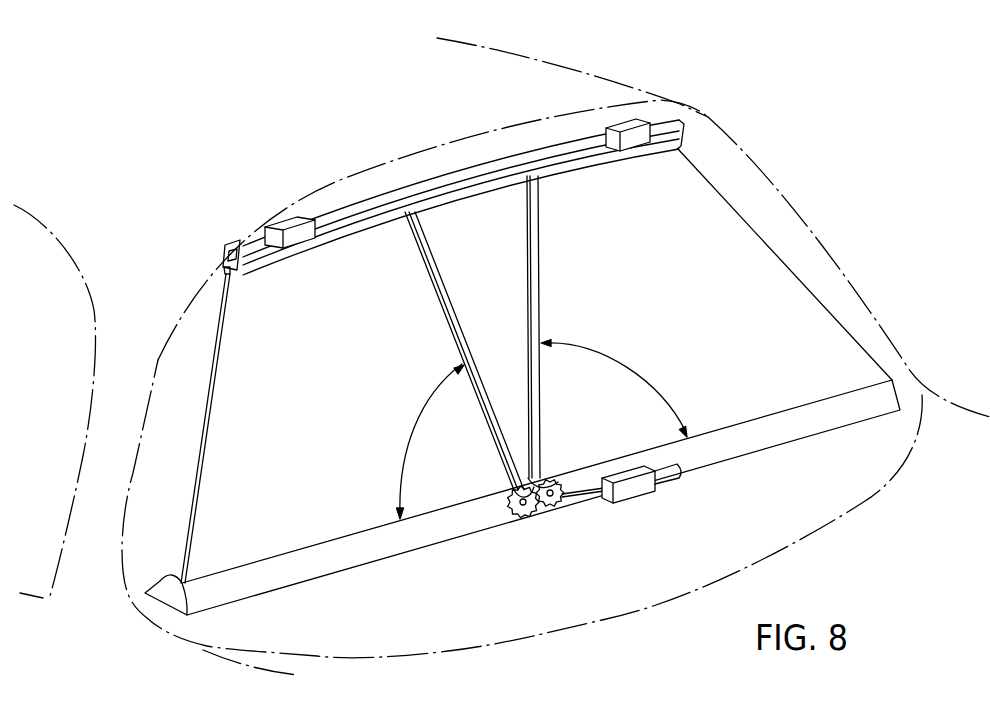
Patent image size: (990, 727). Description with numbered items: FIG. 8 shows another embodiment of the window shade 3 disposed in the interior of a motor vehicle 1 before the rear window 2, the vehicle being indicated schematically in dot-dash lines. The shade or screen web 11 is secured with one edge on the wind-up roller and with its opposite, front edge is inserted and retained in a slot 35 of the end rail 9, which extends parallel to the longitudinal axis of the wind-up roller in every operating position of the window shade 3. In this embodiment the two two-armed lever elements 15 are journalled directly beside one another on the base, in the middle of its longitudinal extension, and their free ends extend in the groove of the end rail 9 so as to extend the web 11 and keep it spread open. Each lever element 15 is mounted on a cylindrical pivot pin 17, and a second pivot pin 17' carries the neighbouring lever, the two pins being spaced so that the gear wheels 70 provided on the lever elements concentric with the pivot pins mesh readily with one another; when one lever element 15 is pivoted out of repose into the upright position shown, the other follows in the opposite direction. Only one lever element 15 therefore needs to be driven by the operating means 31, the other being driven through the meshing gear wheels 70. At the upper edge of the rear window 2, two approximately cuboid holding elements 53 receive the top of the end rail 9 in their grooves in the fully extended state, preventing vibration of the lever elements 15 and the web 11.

The motor vehicle 1 is at (563, 66).
The rear window 2 is at (778, 175).
The window shade 3 is at (806, 261).
The end rail 9 is at (447, 177).
The shade web 11 is at (277, 377).
The lever elements 15 is at (440, 291).
The pivot pin 17 is at (494, 477).
The pivot joint 17' is at (555, 456).
The operating means 31 is at (629, 478).
The slot 35 is at (224, 268).
The holding elements 53 is at (287, 222).
The gear wheels 70 is at (520, 518).